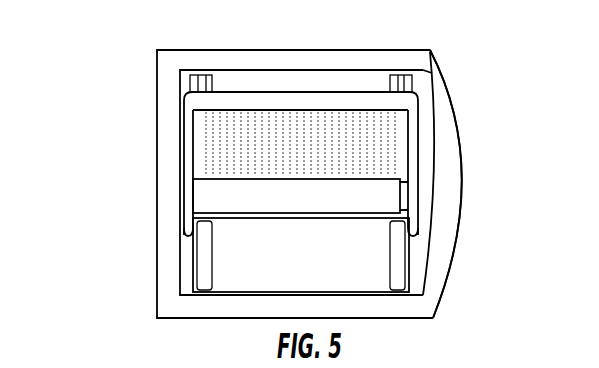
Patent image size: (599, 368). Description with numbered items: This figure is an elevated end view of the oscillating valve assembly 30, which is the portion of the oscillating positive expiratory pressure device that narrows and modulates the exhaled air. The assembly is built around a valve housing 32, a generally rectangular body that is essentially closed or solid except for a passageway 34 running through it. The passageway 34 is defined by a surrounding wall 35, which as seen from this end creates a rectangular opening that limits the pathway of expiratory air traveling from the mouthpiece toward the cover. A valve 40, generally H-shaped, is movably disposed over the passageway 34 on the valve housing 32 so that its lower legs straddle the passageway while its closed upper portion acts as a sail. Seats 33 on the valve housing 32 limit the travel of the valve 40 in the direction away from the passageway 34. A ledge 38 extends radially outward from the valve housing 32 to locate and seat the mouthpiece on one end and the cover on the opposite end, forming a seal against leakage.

The oscillating valve assembly 30 is at (98, 82).
The valve housing 32 is at (431, 270).
The seat 33 is at (214, 83).
The passageway 34 is at (260, 200).
The wall of passageway 35 is at (263, 221).
The ledge 38 is at (463, 161).
The valve 40 is at (228, 131).